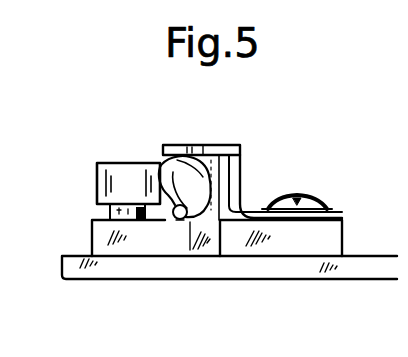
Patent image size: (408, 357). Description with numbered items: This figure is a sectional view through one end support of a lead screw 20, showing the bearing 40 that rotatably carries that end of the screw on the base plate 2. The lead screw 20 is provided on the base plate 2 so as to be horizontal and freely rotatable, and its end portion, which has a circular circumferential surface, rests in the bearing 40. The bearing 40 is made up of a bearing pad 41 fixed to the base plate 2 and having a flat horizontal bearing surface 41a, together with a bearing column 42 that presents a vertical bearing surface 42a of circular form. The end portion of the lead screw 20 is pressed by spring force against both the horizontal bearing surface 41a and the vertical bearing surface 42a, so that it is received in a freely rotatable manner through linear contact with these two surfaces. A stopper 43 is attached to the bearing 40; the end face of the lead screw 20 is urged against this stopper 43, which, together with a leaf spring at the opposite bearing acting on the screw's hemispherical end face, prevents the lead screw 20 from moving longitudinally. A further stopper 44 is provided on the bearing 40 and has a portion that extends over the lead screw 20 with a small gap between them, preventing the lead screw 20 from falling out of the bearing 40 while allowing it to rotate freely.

The base plate 2 is at (336, 270).
The lead screw 20 is at (163, 166).
The bearing 40 is at (276, 166).
The bearing pad 41 is at (293, 246).
The horizontal bearing surface 41a is at (178, 220).
The bearing column 42 is at (97, 174).
The vertical bearing surface 42a is at (167, 216).
The stopper 43 is at (211, 247).
The stopper 44 is at (205, 145).